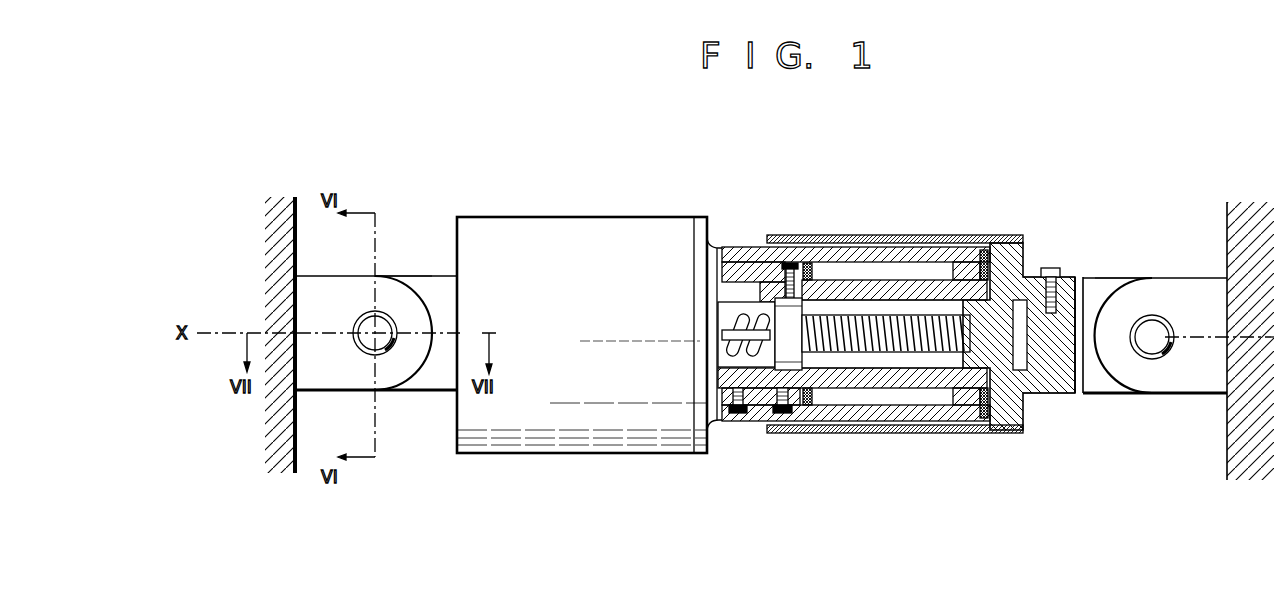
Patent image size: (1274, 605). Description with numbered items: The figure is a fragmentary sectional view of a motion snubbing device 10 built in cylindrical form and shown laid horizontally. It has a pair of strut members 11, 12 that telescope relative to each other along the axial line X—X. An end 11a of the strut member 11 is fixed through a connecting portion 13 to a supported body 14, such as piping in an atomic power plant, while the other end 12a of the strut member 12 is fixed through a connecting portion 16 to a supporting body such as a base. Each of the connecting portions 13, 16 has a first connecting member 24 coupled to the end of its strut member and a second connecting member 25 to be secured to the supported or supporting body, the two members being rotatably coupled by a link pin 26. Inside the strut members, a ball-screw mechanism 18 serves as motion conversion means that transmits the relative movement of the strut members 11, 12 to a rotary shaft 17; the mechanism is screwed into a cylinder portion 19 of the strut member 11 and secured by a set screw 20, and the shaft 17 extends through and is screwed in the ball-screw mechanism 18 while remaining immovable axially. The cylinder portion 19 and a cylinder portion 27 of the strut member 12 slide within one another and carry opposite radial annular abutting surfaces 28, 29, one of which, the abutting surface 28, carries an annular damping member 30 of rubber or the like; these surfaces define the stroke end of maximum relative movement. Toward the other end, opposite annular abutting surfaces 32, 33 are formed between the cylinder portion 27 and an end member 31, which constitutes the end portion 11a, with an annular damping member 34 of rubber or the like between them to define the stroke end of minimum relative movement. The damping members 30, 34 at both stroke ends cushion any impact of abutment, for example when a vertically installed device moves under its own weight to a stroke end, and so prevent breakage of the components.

The motion snubbing device 10 is at (721, 218).
The strut member 11 is at (998, 243).
The end of the strut member 11a is at (1076, 276).
The strut member 12 is at (600, 216).
The end of the strut member 12a is at (428, 392).
The connecting portion 13 is at (1139, 266).
The supported body 14 is at (1229, 451).
The connecting portion 16 is at (390, 262).
The rotary shaft 17 is at (871, 352).
The ball-screw mechanism 18 is at (763, 358).
The cylinder portion 19 is at (903, 283).
The set screw 20 is at (788, 274).
The first connecting member 24 is at (431, 282).
The second connecting member 25 is at (328, 284).
The link pin 26 is at (371, 339).
The cylinder portion 27 is at (870, 249).
The annular abutting surface 28 is at (810, 260).
The annular abutting surface 29 is at (957, 266).
The annular damping member 30 is at (818, 419).
The end member 31 is at (1045, 394).
The annular abutting surface 32 is at (990, 268).
The annular abutting surface 33 is at (982, 258).
The annular damping member 34 is at (983, 420).